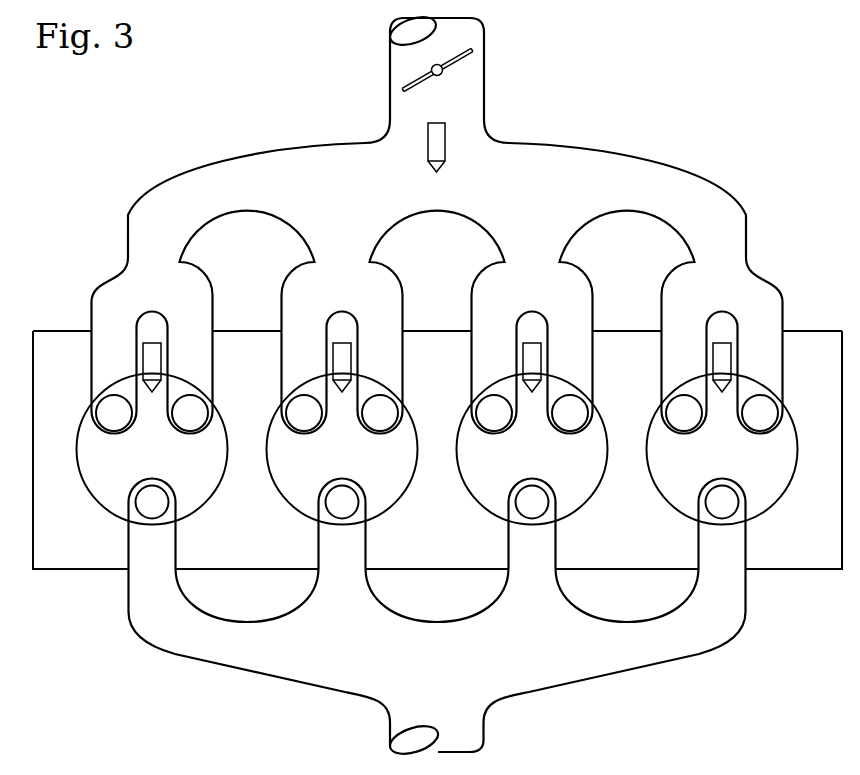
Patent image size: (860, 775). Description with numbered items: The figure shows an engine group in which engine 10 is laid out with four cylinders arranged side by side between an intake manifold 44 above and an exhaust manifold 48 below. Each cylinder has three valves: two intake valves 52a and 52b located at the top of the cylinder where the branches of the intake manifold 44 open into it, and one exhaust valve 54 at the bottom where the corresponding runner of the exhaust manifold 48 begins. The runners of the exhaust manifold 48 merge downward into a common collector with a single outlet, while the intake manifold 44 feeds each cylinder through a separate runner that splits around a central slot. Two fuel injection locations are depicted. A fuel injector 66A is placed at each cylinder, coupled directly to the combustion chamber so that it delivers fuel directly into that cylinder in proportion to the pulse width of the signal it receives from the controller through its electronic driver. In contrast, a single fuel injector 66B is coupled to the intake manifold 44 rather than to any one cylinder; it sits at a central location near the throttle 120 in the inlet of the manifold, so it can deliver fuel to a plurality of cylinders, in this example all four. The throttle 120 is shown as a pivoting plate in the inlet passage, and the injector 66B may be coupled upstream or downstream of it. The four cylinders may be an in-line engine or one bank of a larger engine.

The engine 10 is at (808, 554).
The intake manifold 44 is at (552, 203).
The exhaust manifold 48 is at (552, 661).
The intake valve 52a is at (208, 433).
The intake valve 52b is at (97, 433).
The exhaust valve 54 is at (318, 490).
The fuel injector 66A is at (342, 341).
The fuel injector 66B is at (428, 142).
The throttle 120 is at (414, 87).